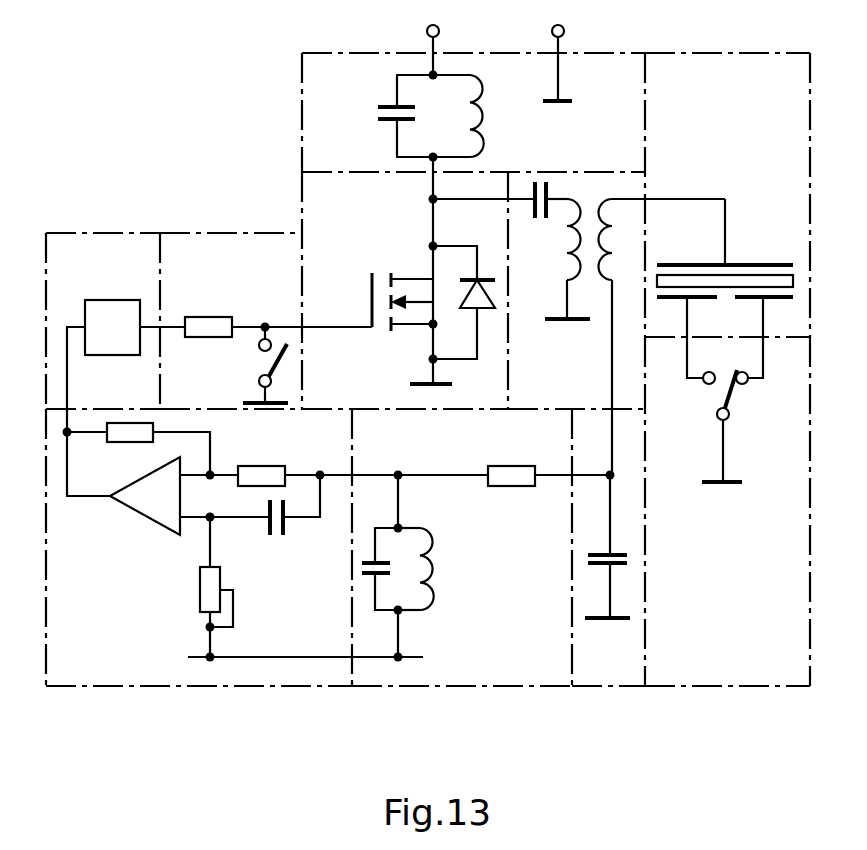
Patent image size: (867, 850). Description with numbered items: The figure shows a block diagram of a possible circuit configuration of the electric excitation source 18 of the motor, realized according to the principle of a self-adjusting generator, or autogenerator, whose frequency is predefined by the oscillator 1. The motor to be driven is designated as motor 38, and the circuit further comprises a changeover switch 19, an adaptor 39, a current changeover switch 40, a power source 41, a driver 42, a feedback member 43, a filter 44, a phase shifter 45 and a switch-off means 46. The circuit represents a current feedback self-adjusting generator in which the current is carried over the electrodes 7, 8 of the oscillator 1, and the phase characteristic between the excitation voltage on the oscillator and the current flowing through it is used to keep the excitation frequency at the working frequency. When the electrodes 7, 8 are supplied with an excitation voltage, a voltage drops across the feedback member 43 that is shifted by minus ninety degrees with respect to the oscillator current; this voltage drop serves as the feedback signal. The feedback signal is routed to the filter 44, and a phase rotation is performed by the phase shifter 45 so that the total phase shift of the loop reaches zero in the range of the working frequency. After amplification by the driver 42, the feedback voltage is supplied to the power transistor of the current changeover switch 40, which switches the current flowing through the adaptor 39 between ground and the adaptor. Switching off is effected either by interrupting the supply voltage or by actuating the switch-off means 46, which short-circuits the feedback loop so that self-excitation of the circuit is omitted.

The oscillator 1 is at (748, 230).
The electrode 7 is at (727, 317).
The electrode 8 is at (725, 246).
The electric excitation source 18 is at (228, 157).
The changeover switch 19 is at (727, 491).
The motor 38 is at (727, 195).
The adaptor 39 is at (579, 323).
The current changeover switch 40 is at (405, 290).
The power source 41 is at (473, 126).
The driver 42 is at (155, 332).
The feedback member 43 is at (608, 547).
The filter 44 is at (481, 547).
The phase shifter 45 is at (234, 547).
The switch-off means 46 is at (266, 321).